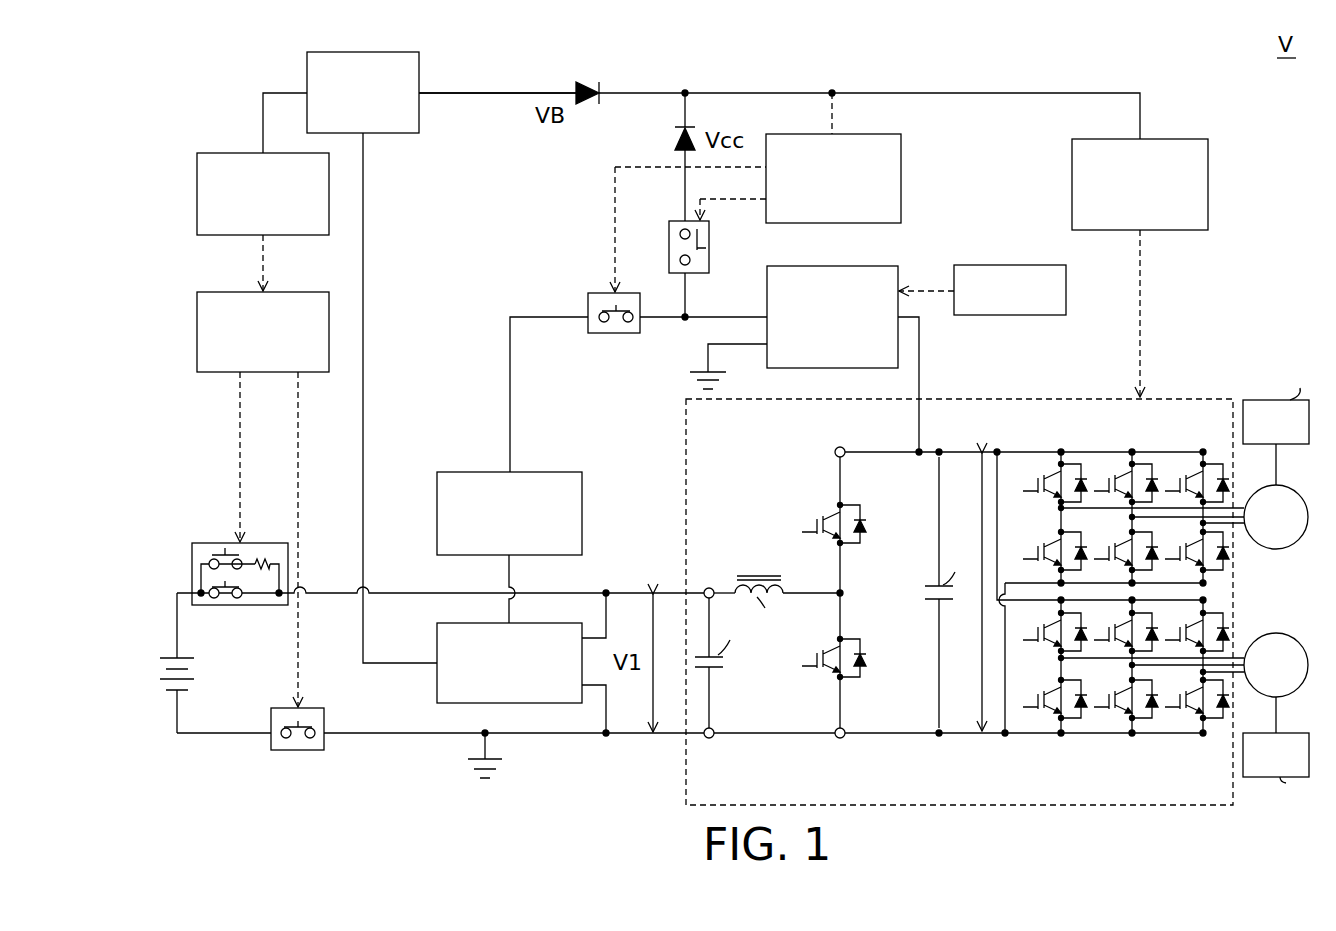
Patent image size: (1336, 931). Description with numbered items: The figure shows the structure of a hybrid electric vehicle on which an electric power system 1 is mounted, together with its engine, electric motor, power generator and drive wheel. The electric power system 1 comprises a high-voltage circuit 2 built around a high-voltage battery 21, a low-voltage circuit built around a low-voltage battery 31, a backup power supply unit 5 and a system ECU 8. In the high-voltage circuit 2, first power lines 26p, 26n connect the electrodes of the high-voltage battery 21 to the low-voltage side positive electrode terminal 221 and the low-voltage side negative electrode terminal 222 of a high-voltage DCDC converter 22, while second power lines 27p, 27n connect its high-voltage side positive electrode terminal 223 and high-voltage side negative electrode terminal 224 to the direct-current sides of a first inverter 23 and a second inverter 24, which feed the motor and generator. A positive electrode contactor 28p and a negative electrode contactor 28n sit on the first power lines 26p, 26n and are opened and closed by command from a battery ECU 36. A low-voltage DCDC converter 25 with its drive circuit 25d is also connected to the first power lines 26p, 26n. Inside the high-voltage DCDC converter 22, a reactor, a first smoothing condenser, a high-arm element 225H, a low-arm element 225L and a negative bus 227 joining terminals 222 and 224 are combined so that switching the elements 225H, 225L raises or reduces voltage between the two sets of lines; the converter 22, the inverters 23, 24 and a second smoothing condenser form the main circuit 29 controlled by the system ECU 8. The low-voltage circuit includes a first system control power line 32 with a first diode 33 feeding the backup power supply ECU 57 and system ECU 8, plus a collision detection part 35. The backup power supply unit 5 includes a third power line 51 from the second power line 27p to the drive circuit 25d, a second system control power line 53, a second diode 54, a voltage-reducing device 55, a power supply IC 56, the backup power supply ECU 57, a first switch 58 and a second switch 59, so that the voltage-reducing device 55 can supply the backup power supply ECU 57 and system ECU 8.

The electric power system 1 is at (1125, 63).
The high-voltage circuit 2 is at (1165, 355).
The backup power supply unit 5 is at (552, 222).
The system ECU 8 is at (1188, 139).
The high-voltage battery 21 is at (192, 658).
The high-voltage DCDC converter 22 is at (806, 595).
The first inverter 23 is at (1118, 442).
The second inverter 24 is at (1163, 748).
The low-voltage DCDC converter 25 is at (437, 683).
The drive circuit 25d is at (582, 514).
The first power line 26p is at (385, 593).
The first power line 26n is at (390, 740).
The second power line 27p is at (962, 452).
The second power line 27n is at (975, 740).
The positive electrode contactor 28p is at (285, 527).
The negative electrode contactor 28n is at (312, 708).
The main circuit 29 is at (1203, 399).
The low-voltage battery 31 is at (380, 52).
The first system control power line 32 is at (460, 93).
The first diode 33 is at (588, 82).
The collision detection part 35 is at (205, 153).
The battery ECU 36 is at (303, 292).
The third power line 51 is at (922, 353).
The second system control power line 53 is at (688, 292).
The second diode 54 is at (672, 141).
The voltage-reducing device 55 is at (870, 266).
The power supply IC 56 is at (1068, 290).
The backup power supply ECU 57 is at (905, 158).
The first switch 58 is at (630, 293).
The second switch 59 is at (710, 253).
The low-voltage side positive electrode terminal 221 is at (710, 588).
The low-voltage side negative electrode terminal 222 is at (713, 740).
The high-voltage side positive electrode terminal 223 is at (843, 447).
The high-voltage side negative electrode terminal 224 is at (845, 740).
The high-arm element 225H is at (818, 500).
The low-arm element 225L is at (870, 640).
The negative bus 227 is at (738, 731).